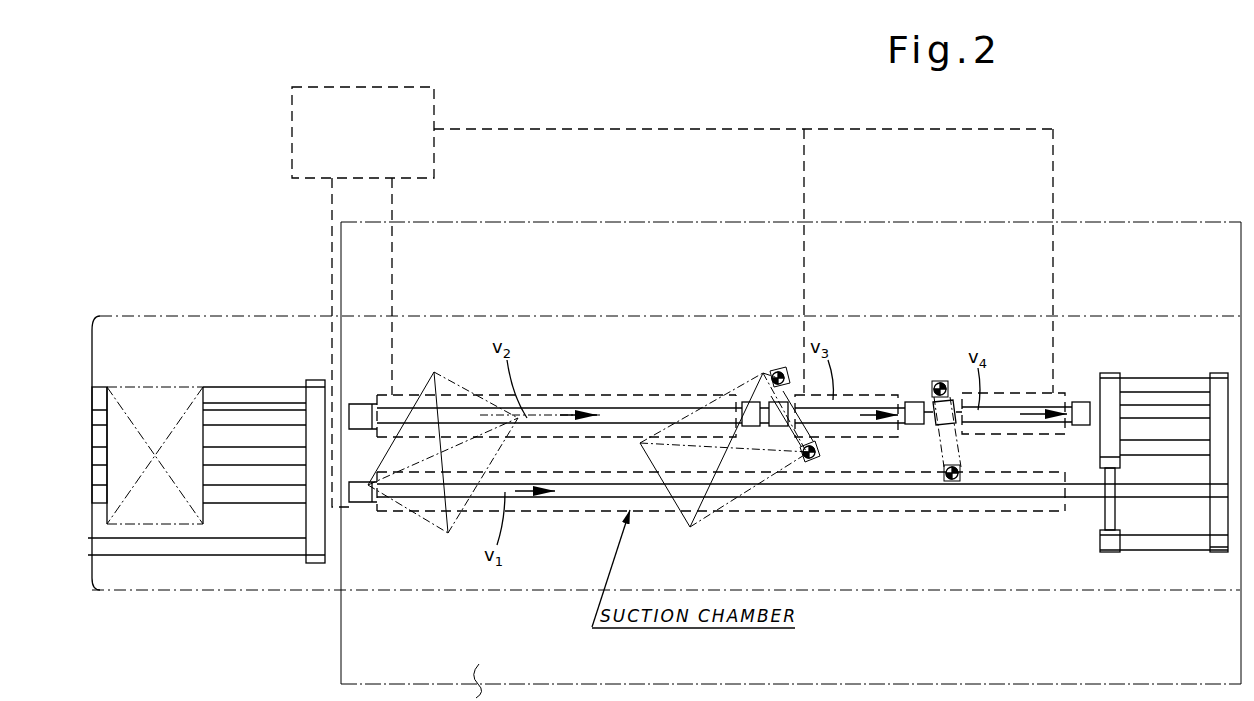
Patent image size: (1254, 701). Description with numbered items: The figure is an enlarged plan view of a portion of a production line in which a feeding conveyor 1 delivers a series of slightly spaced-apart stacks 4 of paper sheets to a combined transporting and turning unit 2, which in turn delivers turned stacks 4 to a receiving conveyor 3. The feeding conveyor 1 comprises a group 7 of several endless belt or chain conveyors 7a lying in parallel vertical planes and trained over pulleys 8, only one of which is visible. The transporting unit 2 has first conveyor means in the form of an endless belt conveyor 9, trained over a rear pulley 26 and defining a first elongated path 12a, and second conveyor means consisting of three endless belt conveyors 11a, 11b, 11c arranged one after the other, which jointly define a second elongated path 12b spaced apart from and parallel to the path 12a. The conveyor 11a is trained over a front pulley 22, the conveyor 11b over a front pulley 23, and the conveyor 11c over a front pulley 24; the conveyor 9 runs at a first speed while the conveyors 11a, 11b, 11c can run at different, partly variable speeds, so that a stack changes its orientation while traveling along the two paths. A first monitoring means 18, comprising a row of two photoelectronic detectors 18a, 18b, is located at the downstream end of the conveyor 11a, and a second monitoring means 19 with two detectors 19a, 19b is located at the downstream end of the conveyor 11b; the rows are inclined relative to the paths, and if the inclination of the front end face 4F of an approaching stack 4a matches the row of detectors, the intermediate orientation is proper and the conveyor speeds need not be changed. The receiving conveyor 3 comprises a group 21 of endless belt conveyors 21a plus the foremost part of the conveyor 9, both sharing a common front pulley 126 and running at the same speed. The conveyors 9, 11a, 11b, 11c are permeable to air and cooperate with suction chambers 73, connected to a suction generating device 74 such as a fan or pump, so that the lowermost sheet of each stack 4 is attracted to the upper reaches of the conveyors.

The feeding conveyor 1 is at (208, 255).
The transporting and turning unit 2 is at (658, 258).
The receiving conveyor 3 is at (1166, 258).
The stack 4 is at (152, 398).
The stack approaching the first monitoring means 4a is at (722, 402).
The front end face 4F is at (768, 372).
The group of belt or chain conveyors 7 is at (165, 570).
The endless belt or chain conveyors 7a is at (272, 398).
The pulley 8 is at (316, 563).
The endless belt or chain conveyor 9 is at (800, 497).
The first conveyor of second conveyor means 11a is at (635, 410).
The second conveyor of second conveyor means 11b is at (855, 402).
The third conveyor of second conveyor means 11c is at (1022, 410).
The first elongated path 12a is at (622, 503).
The second elongated path 12b is at (612, 398).
The first monitoring means 18 is at (815, 445).
The photoelectronic detector 18a is at (777, 371).
The photoelectronic detector 18b is at (826, 500).
The second monitoring means 19 is at (956, 440).
The photoelectronic detector 19a is at (939, 382).
The photoelectronic detector 19b is at (953, 482).
The group of endless chain or belt conveyors 21 is at (1127, 558).
The endless chain or belt conveyors 21a is at (1150, 455).
The front sprocket wheel or pulley 22 is at (748, 400).
The front sprocket wheel or pulley 23 is at (905, 400).
The front sprocket wheel or pulley 24 is at (1080, 402).
The rear pulley 26 is at (368, 505).
The suction chamber 73 is at (404, 402).
The suction generating device 74 is at (399, 102).
The common front sprocket wheel or pulley 126 is at (1200, 545).